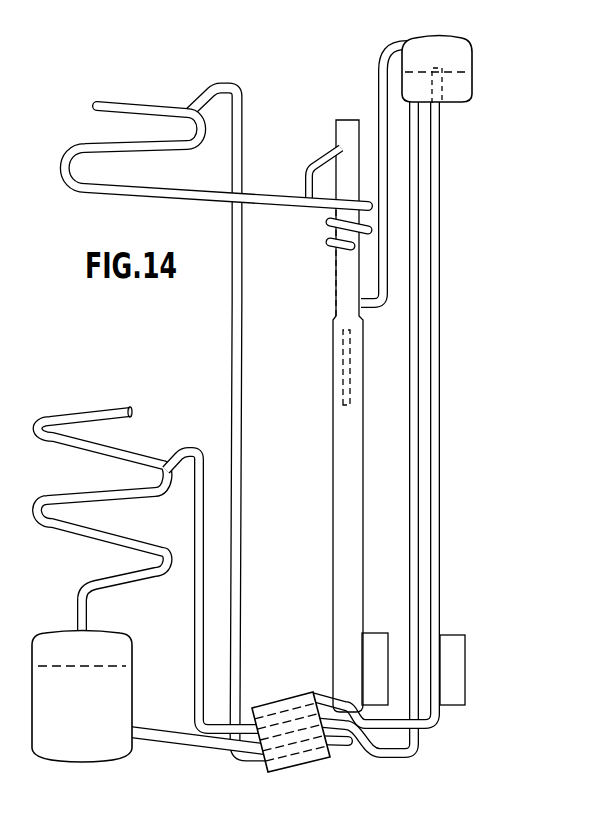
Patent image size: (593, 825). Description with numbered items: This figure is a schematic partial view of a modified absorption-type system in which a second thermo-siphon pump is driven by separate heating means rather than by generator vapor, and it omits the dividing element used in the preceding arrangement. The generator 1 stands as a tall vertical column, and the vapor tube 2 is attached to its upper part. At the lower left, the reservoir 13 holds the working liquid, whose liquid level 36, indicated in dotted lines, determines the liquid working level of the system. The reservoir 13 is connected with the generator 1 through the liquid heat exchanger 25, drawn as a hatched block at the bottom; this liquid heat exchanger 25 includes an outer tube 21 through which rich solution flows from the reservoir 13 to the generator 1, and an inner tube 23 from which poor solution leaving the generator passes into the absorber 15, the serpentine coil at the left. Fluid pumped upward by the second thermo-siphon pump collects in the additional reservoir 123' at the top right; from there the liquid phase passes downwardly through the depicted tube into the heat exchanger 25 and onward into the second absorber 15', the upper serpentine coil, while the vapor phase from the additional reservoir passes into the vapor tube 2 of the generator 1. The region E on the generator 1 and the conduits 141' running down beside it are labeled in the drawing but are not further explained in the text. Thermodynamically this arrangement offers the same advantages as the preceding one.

The generator 1 is at (337, 480).
The vapor tube 2 is at (342, 126).
The heating element E is at (341, 322).
The reservoir 13 is at (57, 644).
The absorber 15 is at (102, 508).
The second absorber 15' is at (216, 156).
The outer tube 21 is at (167, 735).
The inner tube 23 is at (196, 613).
The liquid heat exchanger 25 is at (306, 757).
The liquid level 36 is at (115, 663).
The additional reservoir 123' is at (399, 168).
The conduits 141' is at (394, 425).